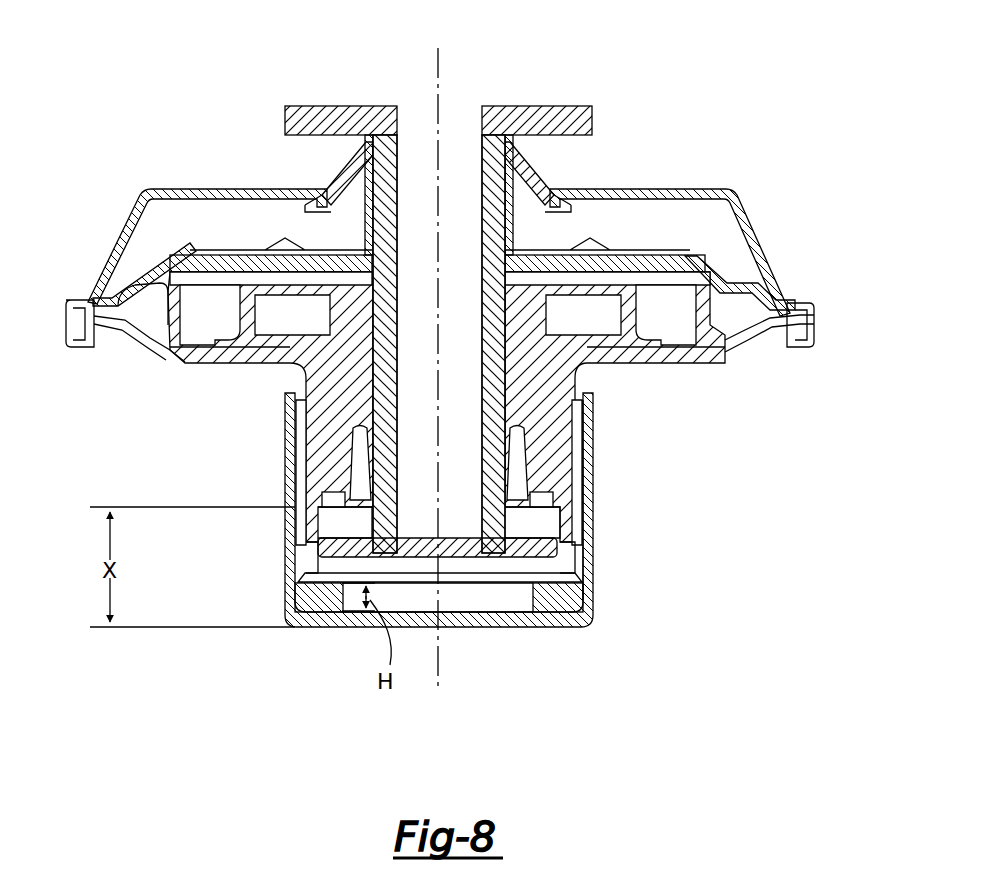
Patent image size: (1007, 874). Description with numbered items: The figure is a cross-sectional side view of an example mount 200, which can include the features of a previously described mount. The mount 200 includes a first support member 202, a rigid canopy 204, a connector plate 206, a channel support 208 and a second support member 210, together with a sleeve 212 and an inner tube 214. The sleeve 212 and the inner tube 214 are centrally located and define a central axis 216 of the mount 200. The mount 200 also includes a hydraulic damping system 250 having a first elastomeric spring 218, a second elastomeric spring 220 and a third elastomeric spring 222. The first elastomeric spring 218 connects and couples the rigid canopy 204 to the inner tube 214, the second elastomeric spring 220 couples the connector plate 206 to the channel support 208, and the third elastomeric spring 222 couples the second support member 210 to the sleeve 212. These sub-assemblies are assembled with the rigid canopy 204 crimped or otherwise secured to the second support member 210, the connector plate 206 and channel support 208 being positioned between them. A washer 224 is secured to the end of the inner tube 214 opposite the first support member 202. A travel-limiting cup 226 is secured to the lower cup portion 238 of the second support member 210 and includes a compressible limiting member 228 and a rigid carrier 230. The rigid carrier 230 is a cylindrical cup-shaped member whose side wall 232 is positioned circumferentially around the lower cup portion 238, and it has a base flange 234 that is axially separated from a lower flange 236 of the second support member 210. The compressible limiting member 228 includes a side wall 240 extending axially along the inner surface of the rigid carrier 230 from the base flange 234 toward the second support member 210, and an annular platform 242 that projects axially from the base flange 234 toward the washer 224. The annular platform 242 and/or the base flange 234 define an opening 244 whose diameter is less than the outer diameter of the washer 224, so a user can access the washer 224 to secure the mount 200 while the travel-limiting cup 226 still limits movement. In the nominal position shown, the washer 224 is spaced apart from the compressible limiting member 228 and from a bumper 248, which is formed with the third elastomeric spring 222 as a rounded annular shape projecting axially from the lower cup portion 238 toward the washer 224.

The mount 200 is at (172, 60).
The hydraulic damping system 250 is at (104, 190).
The first support member 202 is at (565, 118).
The rigid canopy 204 is at (690, 193).
The connector plate 206 is at (690, 255).
The channel support 208 is at (790, 302).
The second support member 210 is at (748, 345).
The sleeve 212 is at (500, 390).
The inner tube 214 is at (372, 142).
The central axis 216 is at (438, 60).
The first elastomeric spring 218 is at (530, 185).
The second elastomeric spring 220 is at (715, 272).
The third elastomeric spring 222 is at (708, 340).
The washer 224 is at (337, 552).
The travel-limiting cup 226 is at (282, 490).
The compressible limiting member 228 is at (320, 630).
The rigid carrier 230 is at (300, 438).
The side wall 232 is at (590, 522).
The base flange 234 is at (568, 620).
The lower flange 236 is at (545, 497).
The lower cup portion 238 is at (572, 452).
The side wall 240 is at (565, 548).
The annular platform 242 is at (570, 572).
The opening 244 is at (492, 632).
The bumper 248 is at (330, 515).